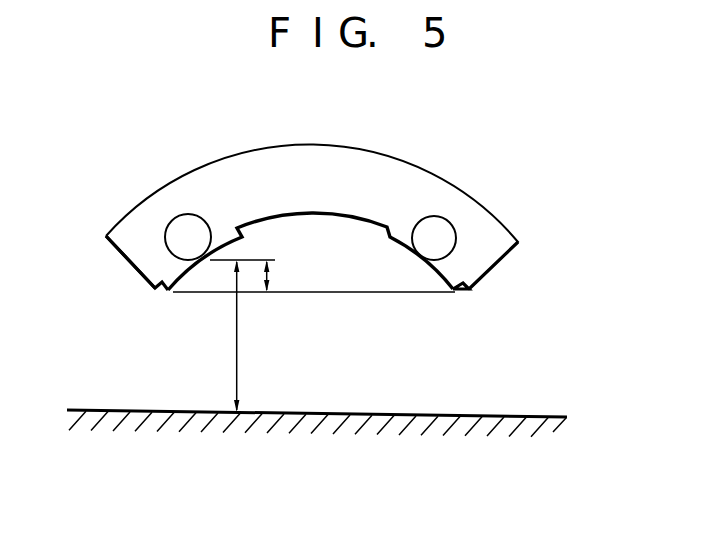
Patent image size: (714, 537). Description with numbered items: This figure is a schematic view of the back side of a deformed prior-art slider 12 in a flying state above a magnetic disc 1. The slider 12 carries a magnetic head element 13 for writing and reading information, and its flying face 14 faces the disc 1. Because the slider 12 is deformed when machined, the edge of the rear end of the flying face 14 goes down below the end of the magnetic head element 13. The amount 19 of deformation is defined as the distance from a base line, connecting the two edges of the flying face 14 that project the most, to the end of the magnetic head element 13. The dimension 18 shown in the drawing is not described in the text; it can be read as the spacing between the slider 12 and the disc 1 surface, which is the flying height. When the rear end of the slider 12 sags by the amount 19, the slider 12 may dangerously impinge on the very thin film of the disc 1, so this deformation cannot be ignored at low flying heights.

The magnetic disc 1 is at (400, 430).
The slider 12 is at (312, 225).
The magnetic head element 13 is at (443, 235).
The flying face 14 is at (183, 277).
The height dimension 18 is at (238, 352).
The amount of deformation 19 is at (268, 277).